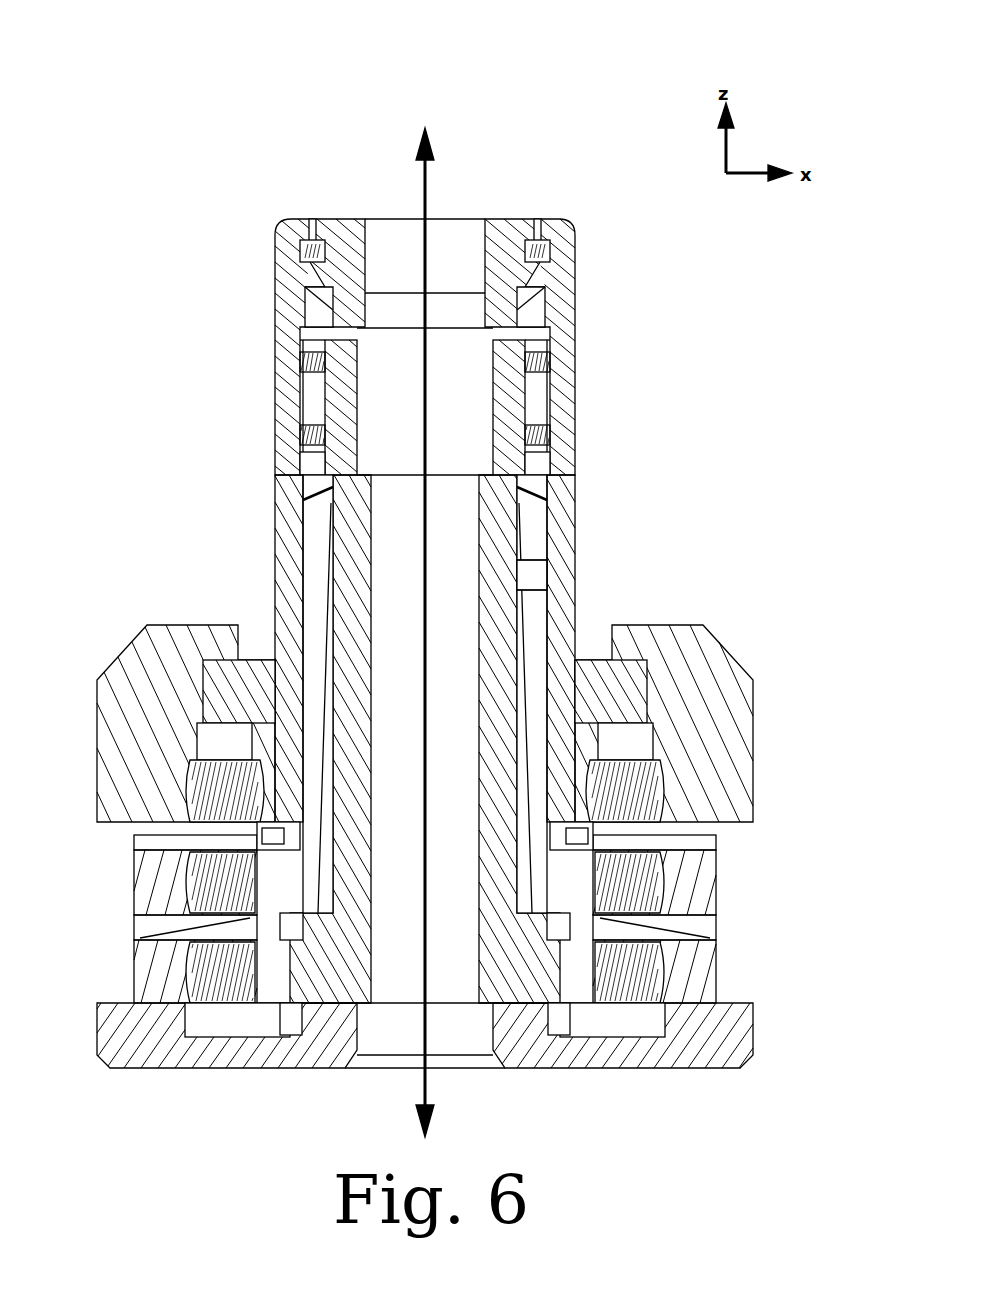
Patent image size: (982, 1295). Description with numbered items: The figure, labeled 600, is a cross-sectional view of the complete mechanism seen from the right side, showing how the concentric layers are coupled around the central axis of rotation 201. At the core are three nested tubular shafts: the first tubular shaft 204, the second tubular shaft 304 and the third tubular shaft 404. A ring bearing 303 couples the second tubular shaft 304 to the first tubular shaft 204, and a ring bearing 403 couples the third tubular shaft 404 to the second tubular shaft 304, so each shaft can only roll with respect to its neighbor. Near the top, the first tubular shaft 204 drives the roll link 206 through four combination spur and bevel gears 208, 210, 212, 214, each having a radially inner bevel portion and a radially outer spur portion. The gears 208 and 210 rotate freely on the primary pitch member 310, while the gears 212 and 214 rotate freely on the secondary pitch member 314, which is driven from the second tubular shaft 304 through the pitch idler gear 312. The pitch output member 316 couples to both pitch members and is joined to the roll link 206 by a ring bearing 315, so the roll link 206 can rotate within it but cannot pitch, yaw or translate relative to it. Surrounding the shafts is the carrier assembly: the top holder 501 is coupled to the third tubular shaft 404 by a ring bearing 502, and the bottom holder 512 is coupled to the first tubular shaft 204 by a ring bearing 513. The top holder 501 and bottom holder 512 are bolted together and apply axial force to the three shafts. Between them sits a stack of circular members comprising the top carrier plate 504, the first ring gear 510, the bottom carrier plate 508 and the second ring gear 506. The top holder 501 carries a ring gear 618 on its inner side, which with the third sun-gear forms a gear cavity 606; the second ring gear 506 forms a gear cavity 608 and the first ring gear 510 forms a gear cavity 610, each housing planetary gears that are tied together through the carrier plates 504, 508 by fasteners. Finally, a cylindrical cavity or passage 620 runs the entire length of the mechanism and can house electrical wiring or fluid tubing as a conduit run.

The fluid connector assembly 600 is at (118, 72).
The central axis of rotation 201 is at (427, 191).
The first tubular shaft 204 is at (355, 600).
The roll link 206 is at (503, 228).
The combination spur and bevel gear 208 is at (300, 455).
The combination spur and bevel gear 210 is at (292, 394).
The combination spur and bevel gear 212 is at (540, 427).
The combination spur and bevel gear 214 is at (515, 366).
The ring bearing 303 is at (345, 896).
The second tubular shaft 304 is at (328, 556).
The primary pitch member 310 is at (305, 262).
The pitch idler gear 312 is at (540, 542).
The secondary pitch member 314 is at (547, 300).
The ring bearing 315 is at (312, 240).
The pitch output member 316 is at (566, 262).
The ring bearing 403 is at (300, 838).
The third tubular shaft 404 is at (290, 586).
The top holder 501 is at (690, 665).
The ring bearing 502 is at (240, 690).
The top carrier plate 504 is at (718, 842).
The second ring gear 506 is at (718, 876).
The bottom carrier plate 508 is at (718, 926).
The first ring gear 510 is at (718, 976).
The bottom holder 512 is at (753, 1040).
The ring bearing 513 is at (295, 1016).
The gear cavity 606 is at (220, 798).
The gear cavity 608 is at (212, 880).
The gear cavity 610 is at (212, 958).
The ring gear 618 is at (673, 787).
The cylindrical cavity or passage 620 is at (458, 240).